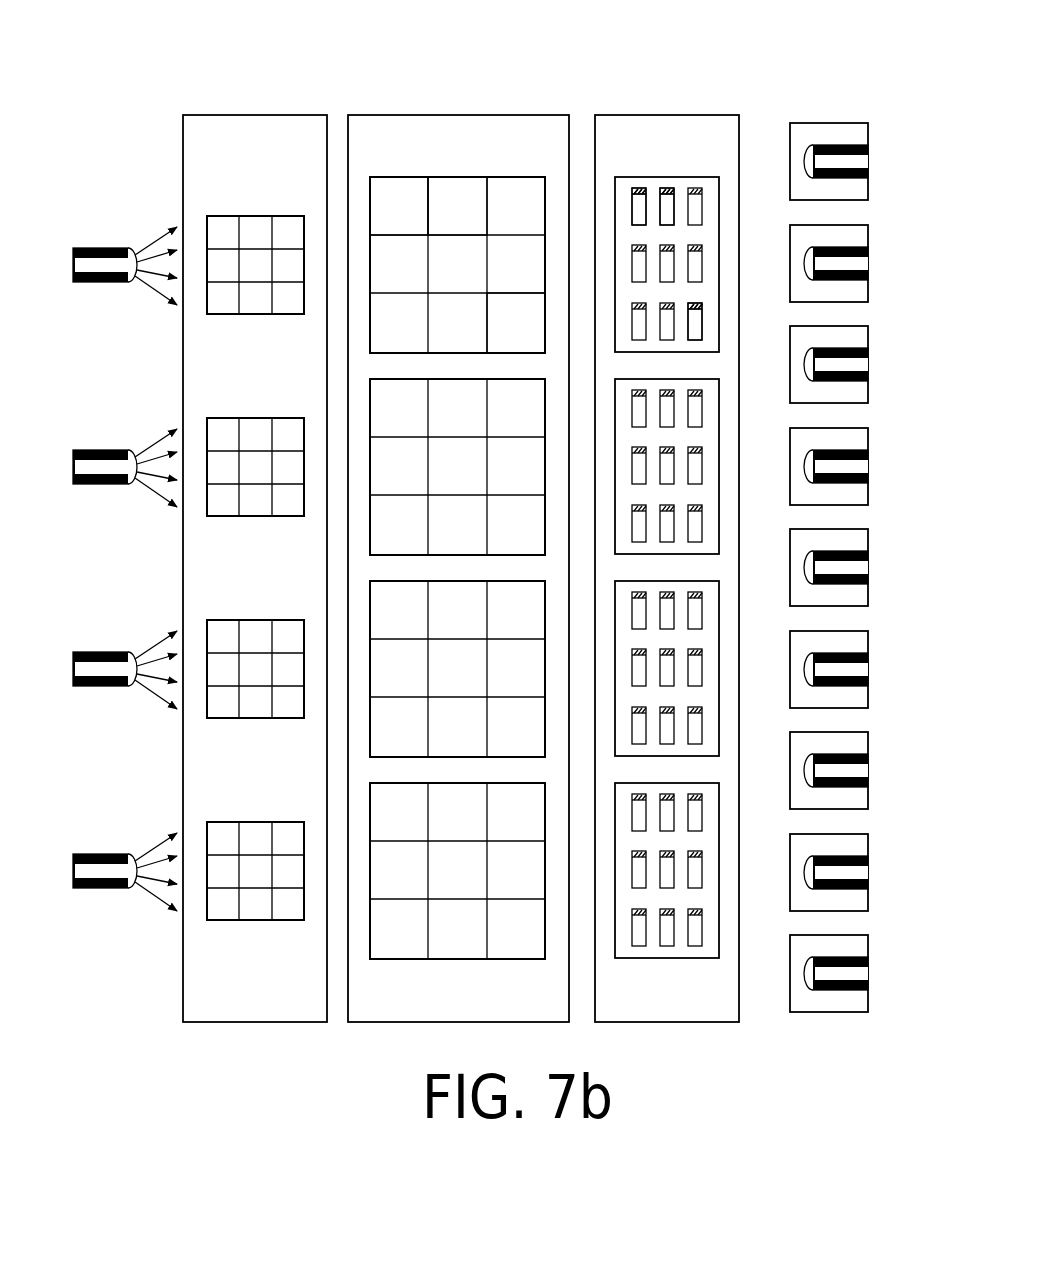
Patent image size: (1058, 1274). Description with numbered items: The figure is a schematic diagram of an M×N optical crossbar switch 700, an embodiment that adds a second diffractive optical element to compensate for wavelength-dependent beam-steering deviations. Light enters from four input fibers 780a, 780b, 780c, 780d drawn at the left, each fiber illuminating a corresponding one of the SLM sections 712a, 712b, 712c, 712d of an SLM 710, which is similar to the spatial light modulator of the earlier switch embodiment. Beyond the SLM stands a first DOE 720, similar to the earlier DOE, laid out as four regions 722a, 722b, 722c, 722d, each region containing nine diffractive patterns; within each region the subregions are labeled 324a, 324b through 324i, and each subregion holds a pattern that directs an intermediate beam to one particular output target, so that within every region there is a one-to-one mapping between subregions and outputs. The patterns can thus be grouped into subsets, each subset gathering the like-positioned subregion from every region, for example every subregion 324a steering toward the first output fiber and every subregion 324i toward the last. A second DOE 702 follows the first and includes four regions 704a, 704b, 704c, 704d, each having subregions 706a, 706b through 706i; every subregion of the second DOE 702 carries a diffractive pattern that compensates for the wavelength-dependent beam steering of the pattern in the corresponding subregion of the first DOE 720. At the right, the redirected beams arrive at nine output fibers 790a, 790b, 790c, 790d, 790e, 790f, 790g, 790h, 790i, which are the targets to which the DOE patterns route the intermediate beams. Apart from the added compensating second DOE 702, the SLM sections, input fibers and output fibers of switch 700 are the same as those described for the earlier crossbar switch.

The M×N optical crossbar switch 700 is at (596, 66).
The second DOE 702 is at (652, 115).
The region of second DOE 704a is at (696, 243).
The region of second DOE 704b is at (720, 465).
The region of second DOE 704c is at (720, 667).
The region of second DOE 704d is at (720, 869).
The subregion of second DOE 706a is at (639, 188).
The subregion of second DOE 706b is at (666, 188).
The subregion of second DOE 706i is at (702, 319).
The SLM 710 is at (250, 115).
The SLM section 712a is at (252, 315).
The SLM section 712b is at (252, 517).
The SLM section 712c is at (252, 719).
The SLM section 712d is at (252, 921).
The first DOE 720 is at (445, 115).
The region of first DOE 722a is at (492, 265).
The region of first DOE 722b is at (422, 426).
The region of first DOE 722c is at (422, 628).
The region of first DOE 722d is at (422, 830).
The subregion 324a is at (422, 224).
The subregion 324b is at (483, 224).
The subregion 324i is at (537, 339).
The input fiber 780a is at (97, 283).
The input fiber 780b is at (97, 485).
The input fiber 780c is at (97, 687).
The input fiber 780d is at (97, 889).
The output fiber 790a is at (868, 162).
The output fiber 790b is at (868, 264).
The output fiber 790c is at (868, 365).
The output fiber 790d is at (868, 467).
The output fiber 790e is at (868, 568).
The output fiber 790f is at (868, 670).
The output fiber 790g is at (868, 771).
The output fiber 790h is at (868, 873).
The output fiber 790i is at (868, 974).